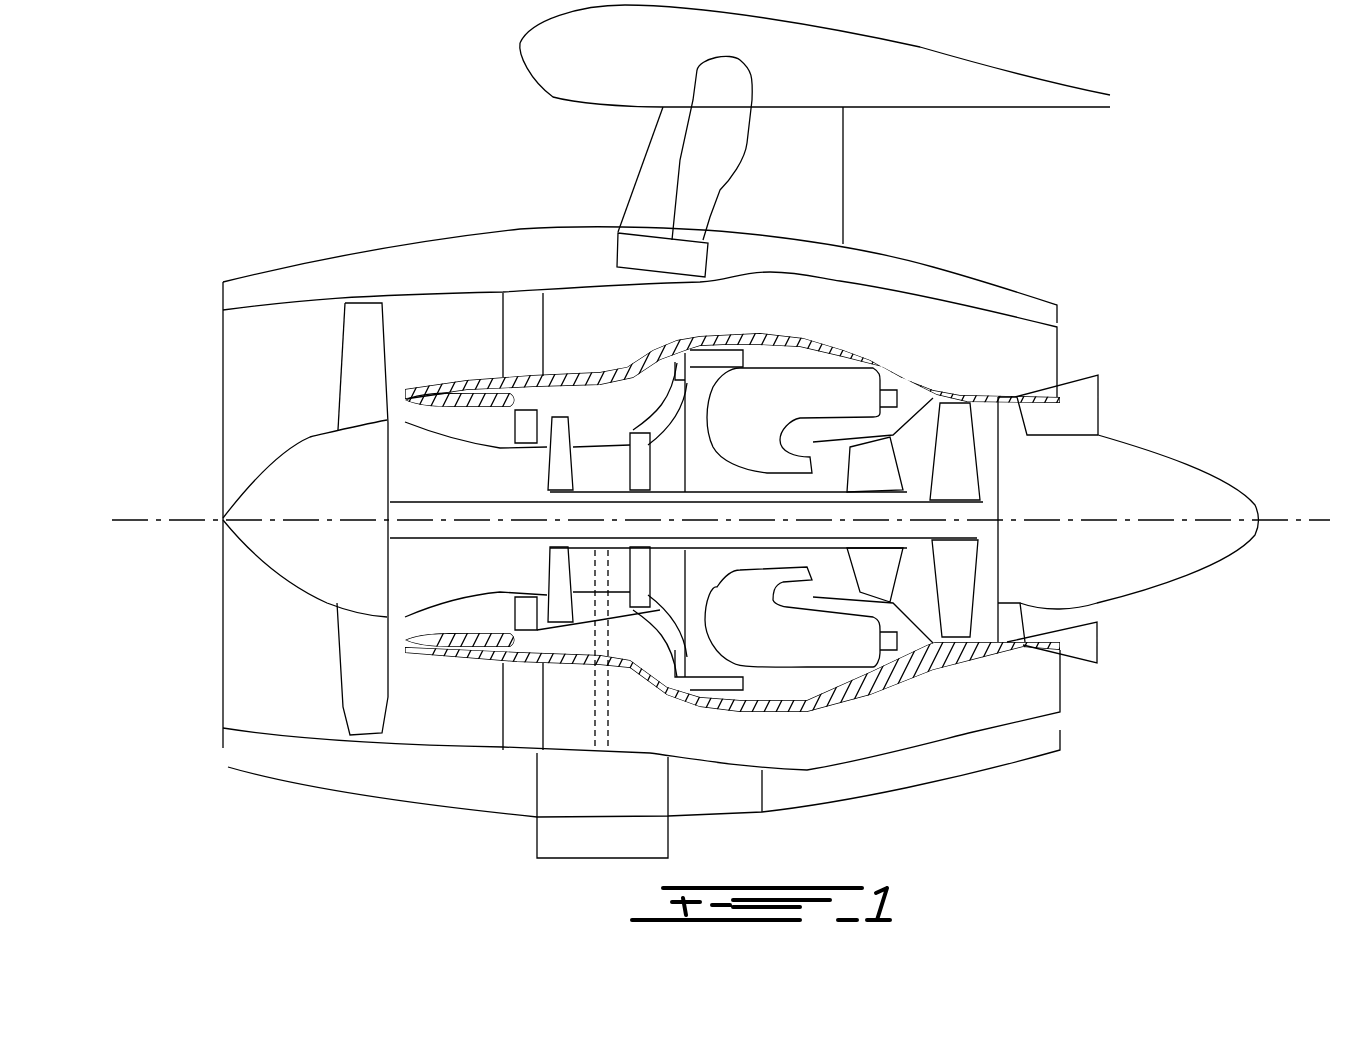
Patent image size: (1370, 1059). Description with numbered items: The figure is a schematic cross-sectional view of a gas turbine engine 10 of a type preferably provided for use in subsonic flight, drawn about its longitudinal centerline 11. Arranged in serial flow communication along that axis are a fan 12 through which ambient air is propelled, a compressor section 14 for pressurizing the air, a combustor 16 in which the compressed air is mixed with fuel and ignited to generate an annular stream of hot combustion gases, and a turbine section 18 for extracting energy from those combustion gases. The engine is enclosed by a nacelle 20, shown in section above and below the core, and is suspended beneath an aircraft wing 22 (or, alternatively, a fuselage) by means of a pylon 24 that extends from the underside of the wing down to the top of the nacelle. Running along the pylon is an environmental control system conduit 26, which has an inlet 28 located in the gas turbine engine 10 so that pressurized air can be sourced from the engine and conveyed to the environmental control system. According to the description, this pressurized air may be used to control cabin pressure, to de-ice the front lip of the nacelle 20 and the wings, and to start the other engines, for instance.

The gas turbine engine 10 is at (721, 431).
The engine centerline axis 11 is at (1295, 520).
The fan 12 is at (360, 662).
The compressor section 14 is at (592, 427).
The combustor 16 is at (795, 388).
The turbine section 18 is at (912, 595).
The nacelle 20 is at (400, 240).
The aircraft wing 22 is at (527, 77).
The pylon 24 is at (657, 123).
The environmental control system conduit 26 is at (673, 160).
The inlet 28 is at (617, 283).